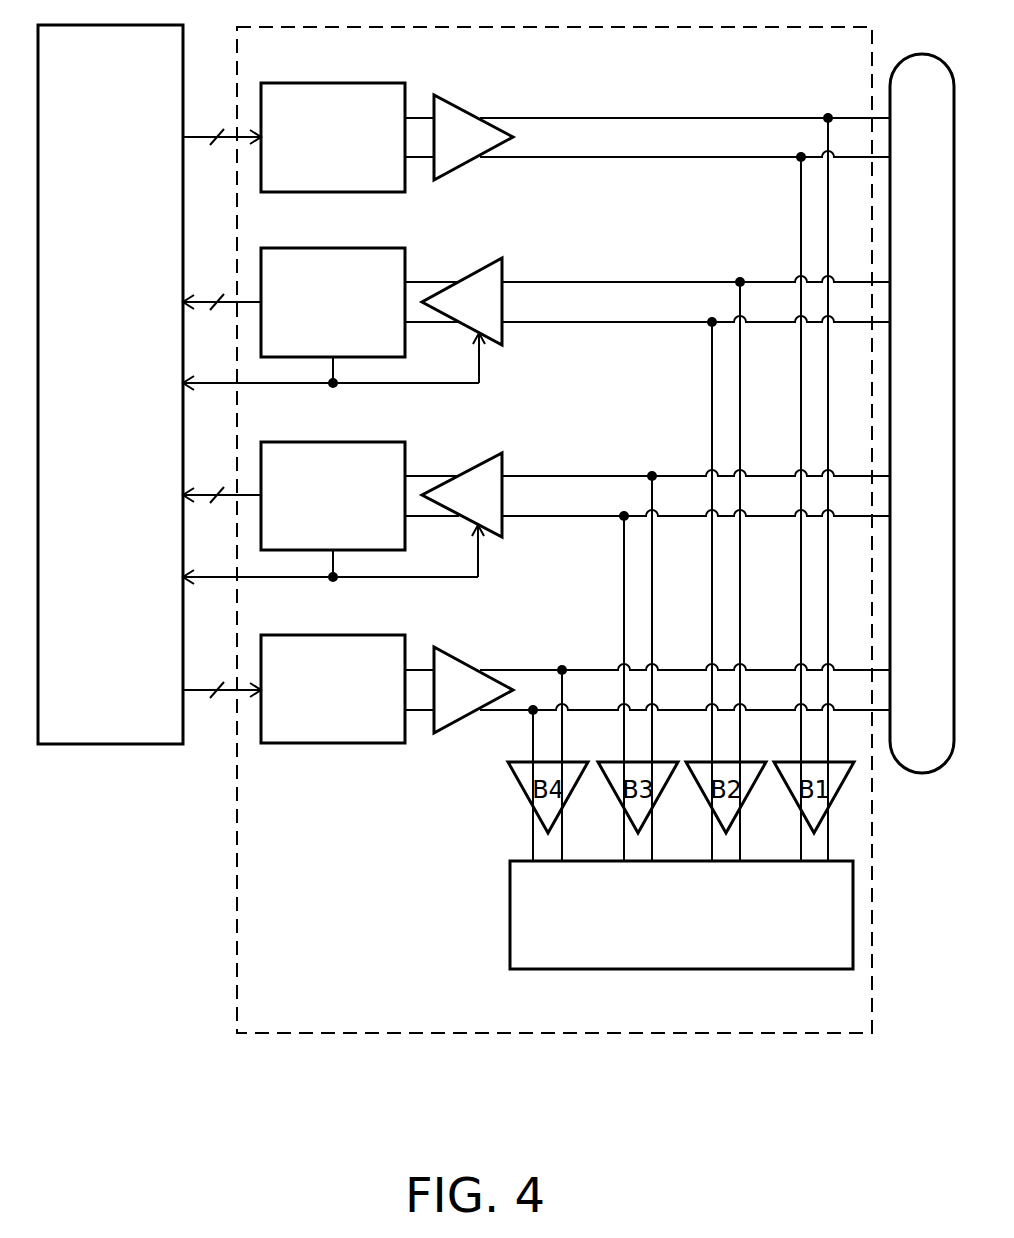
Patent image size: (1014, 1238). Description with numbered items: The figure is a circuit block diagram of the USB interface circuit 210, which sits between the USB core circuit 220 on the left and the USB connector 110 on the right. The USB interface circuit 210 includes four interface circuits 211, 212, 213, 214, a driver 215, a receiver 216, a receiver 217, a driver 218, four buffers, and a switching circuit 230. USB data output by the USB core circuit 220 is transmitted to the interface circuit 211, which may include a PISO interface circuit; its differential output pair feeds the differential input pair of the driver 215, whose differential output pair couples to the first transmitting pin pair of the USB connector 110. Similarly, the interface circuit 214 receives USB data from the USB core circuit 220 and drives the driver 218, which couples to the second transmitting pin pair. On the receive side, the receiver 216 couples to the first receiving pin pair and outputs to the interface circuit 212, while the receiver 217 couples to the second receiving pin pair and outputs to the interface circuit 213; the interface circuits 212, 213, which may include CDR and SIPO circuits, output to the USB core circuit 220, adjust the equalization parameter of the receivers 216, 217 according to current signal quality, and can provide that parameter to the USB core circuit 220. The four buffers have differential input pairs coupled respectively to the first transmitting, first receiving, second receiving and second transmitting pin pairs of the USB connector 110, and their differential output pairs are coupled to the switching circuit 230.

The USB connector 110 is at (920, 775).
The USB interface circuit 210 is at (565, 1035).
The interface circuit 211 is at (335, 83).
The interface circuit 212 is at (335, 248).
The interface circuit 213 is at (335, 442).
The interface circuit 214 is at (335, 635).
The driver 215 is at (458, 106).
The receiver 216 is at (474, 273).
The receiver 217 is at (474, 467).
The driver 218 is at (458, 660).
The USB core circuit 220 is at (108, 745).
The switching circuit 230 is at (735, 969).